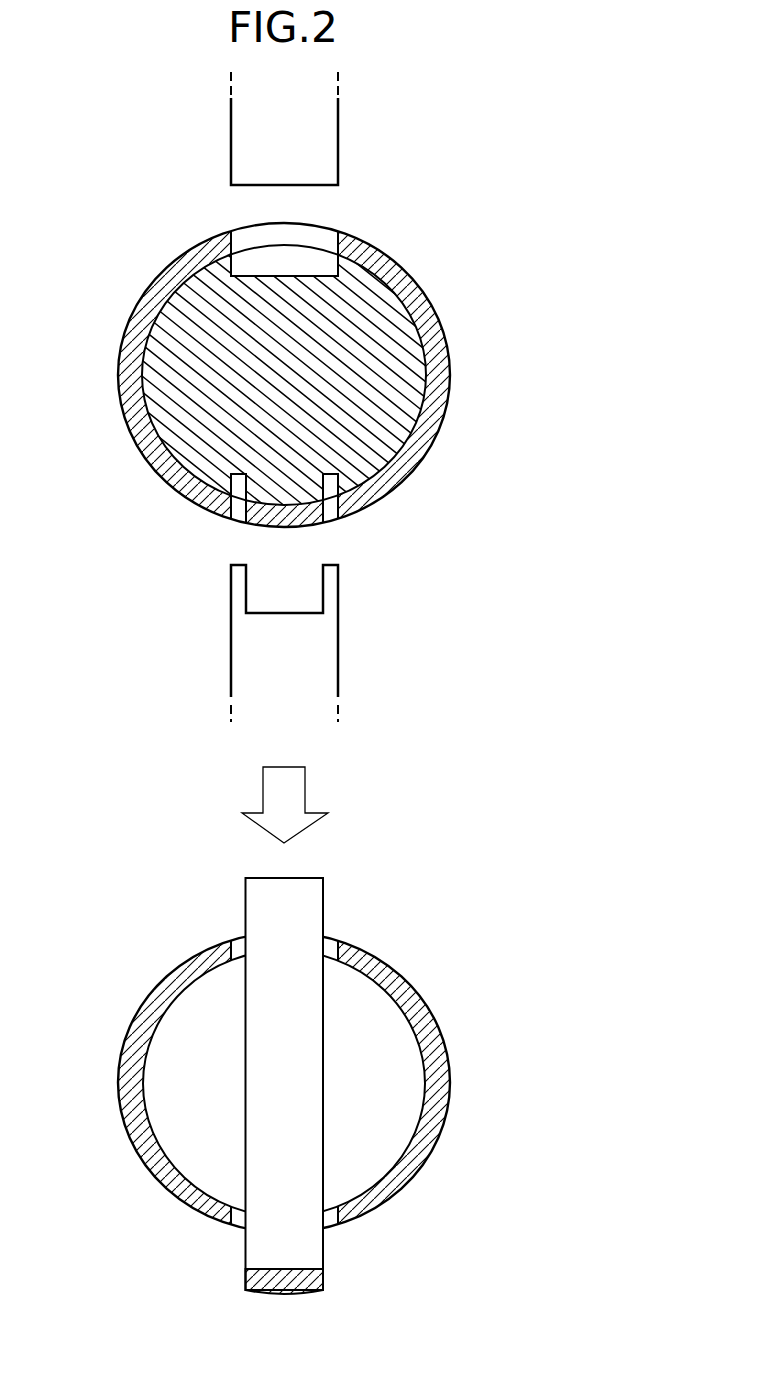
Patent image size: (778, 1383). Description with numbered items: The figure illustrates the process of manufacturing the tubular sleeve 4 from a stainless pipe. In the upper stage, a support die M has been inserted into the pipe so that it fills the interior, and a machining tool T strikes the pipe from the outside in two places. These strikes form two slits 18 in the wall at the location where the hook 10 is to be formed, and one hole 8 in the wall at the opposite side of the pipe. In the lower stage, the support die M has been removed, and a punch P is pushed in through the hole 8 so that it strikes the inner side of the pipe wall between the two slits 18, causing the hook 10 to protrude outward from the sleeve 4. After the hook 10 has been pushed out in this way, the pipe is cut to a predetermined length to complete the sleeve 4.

The tubular sleeve 4 is at (428, 374).
The hole 8 is at (313, 235).
The hook 10 is at (285, 530).
The slits 18 is at (233, 508).
The support die M is at (397, 340).
The machining tool T is at (328, 145).
The punch P is at (312, 898).